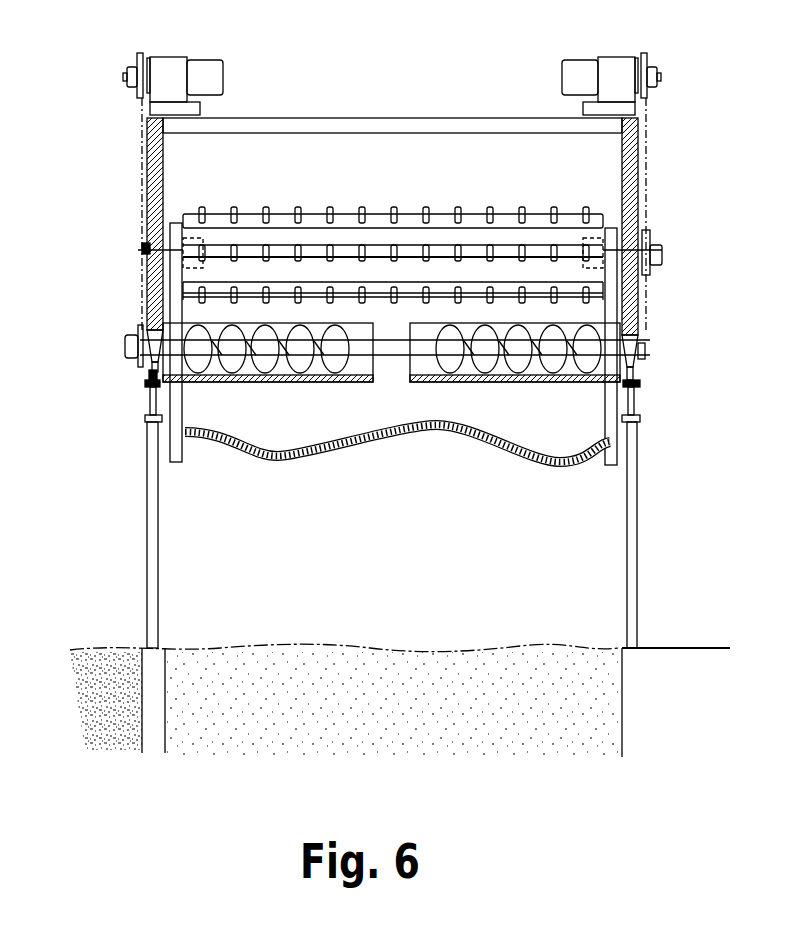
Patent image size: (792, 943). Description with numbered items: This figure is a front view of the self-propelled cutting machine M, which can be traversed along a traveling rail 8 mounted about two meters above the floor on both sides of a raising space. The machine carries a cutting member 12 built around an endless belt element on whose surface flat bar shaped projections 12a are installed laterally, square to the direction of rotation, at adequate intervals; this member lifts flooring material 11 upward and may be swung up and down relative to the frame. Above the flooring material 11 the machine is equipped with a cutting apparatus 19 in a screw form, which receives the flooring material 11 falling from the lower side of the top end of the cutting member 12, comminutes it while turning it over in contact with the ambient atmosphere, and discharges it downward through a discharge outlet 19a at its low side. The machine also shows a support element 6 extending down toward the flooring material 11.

The cutting machine M is at (475, 96).
The cutting member 12 is at (313, 222).
The flat bar shaped projection 12a is at (377, 222).
The cutting apparatus 19 is at (523, 383).
The discharge outlet 19a is at (480, 412).
The traveling rail 8 is at (148, 400).
The support leg 6 is at (638, 476).
The flooring material 11 is at (290, 660).